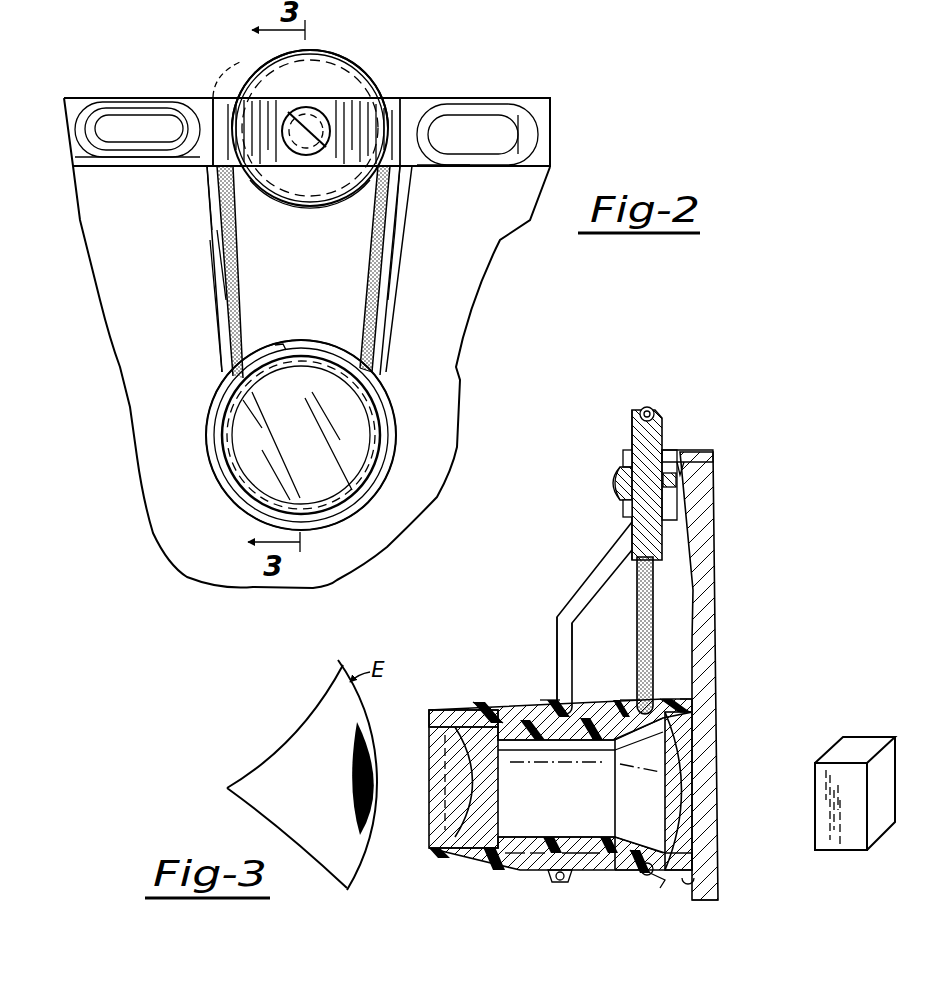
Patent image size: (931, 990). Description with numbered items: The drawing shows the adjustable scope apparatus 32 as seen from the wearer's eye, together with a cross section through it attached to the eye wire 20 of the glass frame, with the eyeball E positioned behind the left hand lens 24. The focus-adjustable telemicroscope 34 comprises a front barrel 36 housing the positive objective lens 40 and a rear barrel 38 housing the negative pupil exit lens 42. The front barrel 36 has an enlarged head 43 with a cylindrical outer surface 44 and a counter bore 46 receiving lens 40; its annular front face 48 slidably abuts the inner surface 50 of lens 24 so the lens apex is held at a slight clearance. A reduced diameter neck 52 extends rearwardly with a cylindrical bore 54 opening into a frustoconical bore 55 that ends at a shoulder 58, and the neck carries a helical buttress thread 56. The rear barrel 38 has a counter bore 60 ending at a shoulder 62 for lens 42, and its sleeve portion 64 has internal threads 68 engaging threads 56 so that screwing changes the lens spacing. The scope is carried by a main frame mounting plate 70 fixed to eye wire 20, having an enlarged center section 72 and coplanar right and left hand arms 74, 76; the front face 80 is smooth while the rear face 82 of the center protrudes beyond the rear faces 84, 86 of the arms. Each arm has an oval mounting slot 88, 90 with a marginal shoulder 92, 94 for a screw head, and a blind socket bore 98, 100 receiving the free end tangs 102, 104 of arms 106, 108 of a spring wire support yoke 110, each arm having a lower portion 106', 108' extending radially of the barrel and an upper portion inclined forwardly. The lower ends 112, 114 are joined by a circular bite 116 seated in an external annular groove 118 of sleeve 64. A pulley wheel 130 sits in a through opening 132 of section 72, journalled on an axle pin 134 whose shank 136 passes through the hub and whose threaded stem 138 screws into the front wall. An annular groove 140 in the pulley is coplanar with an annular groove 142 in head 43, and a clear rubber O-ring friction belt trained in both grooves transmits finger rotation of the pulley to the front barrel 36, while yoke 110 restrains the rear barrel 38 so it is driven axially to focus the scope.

In FIG. 3, the eye wire 20 is at (713, 452).
In FIG. 3, the left hand lens 24 is at (715, 523).
In FIG. 2, the adjustable scope apparatus 32 is at (157, 82).
In FIG. 3, the adjustable scope apparatus 32 is at (588, 448).
In FIG. 2, the focus-adjustable telemicroscope 34 is at (398, 466).
In FIG. 3, the focus-adjustable telemicroscope 34 is at (520, 873).
In FIG. 3, the front barrel 36 is at (628, 875).
In FIG. 2, the rear barrel 38 is at (367, 497).
In FIG. 3, the rear barrel 38 is at (462, 866).
In FIG. 3, the positive objective lens 40 is at (677, 773).
In FIG. 2, the negative pupil exit lens 42 is at (252, 476).
In FIG. 3, the negative pupil exit lens 42 is at (438, 822).
In FIG. 3, the enlarged head 43 is at (630, 702).
In FIG. 3, the cylindrical outer surface 44 is at (706, 892).
In FIG. 3, the counter bore 46 is at (690, 714).
In FIG. 3, the annular front face 48 is at (698, 699).
In FIG. 3, the inner surface 50 is at (692, 872).
In FIG. 3, the reduced diameter neck 52 is at (553, 843).
In FIG. 3, the cylindrical bore 54 is at (513, 838).
In FIG. 3, the frustoconical bore 55 is at (638, 850).
In FIG. 3, the helical buttress thread 56 is at (530, 718).
In FIG. 3, the shoulder 58 is at (664, 699).
In FIG. 2, the counter bore 60 is at (367, 437).
In FIG. 3, the counter bore 60 is at (445, 718).
In FIG. 3, the shoulder 62 is at (473, 702).
In FIG. 3, the sleeve portion 64 is at (545, 698).
In FIG. 3, the internal threads 68 is at (530, 843).
In FIG. 2, the main frame mounting plate 70 is at (486, 97).
In FIG. 3, the main frame mounting plate 70 is at (671, 450).
In FIG. 2, the enlarged center section 72 is at (412, 100).
In FIG. 3, the enlarged center section 72 is at (622, 514).
In FIG. 2, the right hand arm 74 is at (527, 98).
In FIG. 2, the left hand arm 76 is at (167, 98).
In FIG. 3, the front face 80 is at (690, 490).
In FIG. 2, the rear face 82 is at (320, 165).
In FIG. 2, the rear face 84 is at (430, 164).
In FIG. 2, the rear face 86 is at (107, 166).
In FIG. 2, the oval mounting slot 88 is at (505, 143).
In FIG. 2, the oval mounting slot 90 is at (107, 120).
In FIG. 2, the marginal shoulder 92 is at (533, 137).
In FIG. 2, the marginal shoulder 94 is at (93, 100).
In FIG. 2, the blind socket bore 98 is at (440, 88).
In FIG. 2, the blind socket bore 100 is at (228, 68).
In FIG. 2, the free end tang 102 is at (473, 134).
In FIG. 2, the free end tang 104 is at (180, 130).
In FIG. 2, the arm 106 is at (402, 270).
In FIG. 2, the lower portion 106' is at (418, 265).
In FIG. 2, the arm 108 is at (192, 272).
In FIG. 3, the arm 108 is at (586, 618).
In FIG. 2, the lower portion 108' is at (186, 265).
In FIG. 3, the lower portion 108' is at (590, 665).
In FIG. 2, the spring wire support yoke 110 is at (208, 259).
In FIG. 3, the spring wire support yoke 110 is at (565, 617).
In FIG. 2, the lower end 112 is at (373, 364).
In FIG. 2, the lower end 114 is at (230, 364).
In FIG. 2, the circular bite 116 is at (208, 420).
In FIG. 3, the circular bite 116 is at (560, 874).
In FIG. 2, the external annular groove 118 is at (287, 343).
In FIG. 3, the external annular groove 118 is at (563, 881).
In FIG. 2, the pulley wheel 130 is at (354, 57).
In FIG. 3, the pulley wheel 130 is at (627, 414).
In FIG. 3, the through opening 132 is at (624, 446).
In FIG. 2, the axle pin 134 is at (318, 108).
In FIG. 3, the axle pin 134 is at (618, 488).
In FIG. 3, the shank 136 is at (620, 462).
In FIG. 3, the threaded stem 138 is at (700, 478).
In FIG. 3, the annular groove 140 is at (653, 412).
In FIG. 3, the annular groove 142 is at (658, 882).